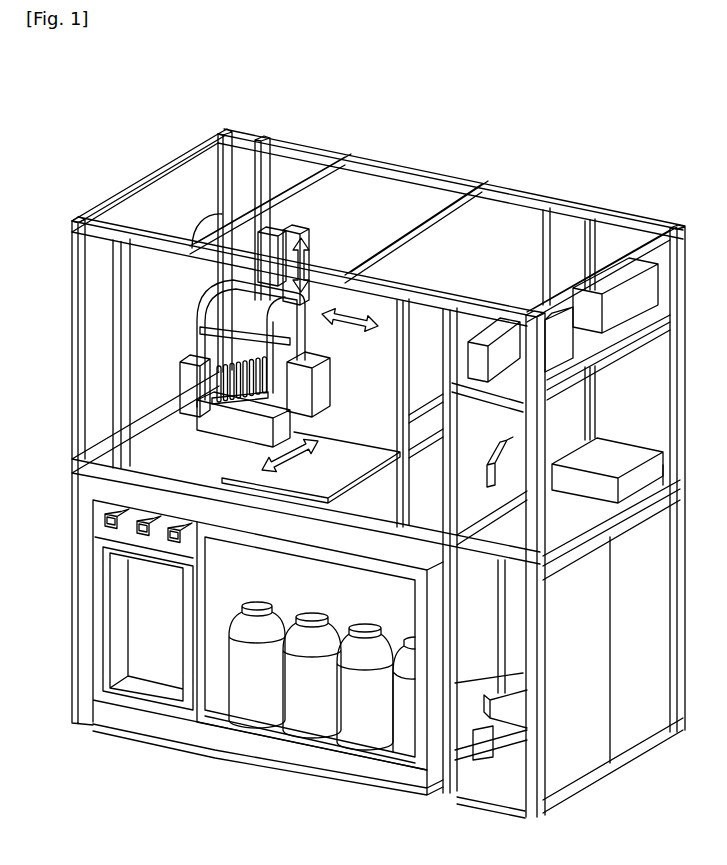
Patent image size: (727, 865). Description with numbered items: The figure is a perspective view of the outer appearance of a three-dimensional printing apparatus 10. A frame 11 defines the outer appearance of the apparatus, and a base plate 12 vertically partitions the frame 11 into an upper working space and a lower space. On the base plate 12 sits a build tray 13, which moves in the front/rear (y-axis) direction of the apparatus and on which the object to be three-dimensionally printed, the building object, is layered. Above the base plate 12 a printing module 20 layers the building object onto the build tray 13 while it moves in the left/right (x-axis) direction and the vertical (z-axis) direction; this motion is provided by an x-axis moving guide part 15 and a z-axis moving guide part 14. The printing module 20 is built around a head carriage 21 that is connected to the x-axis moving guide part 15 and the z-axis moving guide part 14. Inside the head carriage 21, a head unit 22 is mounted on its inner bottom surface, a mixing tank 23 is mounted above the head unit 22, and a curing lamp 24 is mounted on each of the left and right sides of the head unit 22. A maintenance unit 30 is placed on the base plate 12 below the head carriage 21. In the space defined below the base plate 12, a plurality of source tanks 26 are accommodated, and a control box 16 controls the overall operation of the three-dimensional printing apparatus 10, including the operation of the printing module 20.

The 3D printing apparatus 10 is at (457, 103).
The frame 11 is at (70, 244).
The base plate 12 is at (185, 467).
The build tray 13 is at (375, 443).
The z-axis moving guide part 14 is at (262, 272).
The x-axis moving guide part 15 is at (347, 292).
The control box 16 is at (478, 677).
The printing module 20 is at (180, 298).
The head carriage 21 is at (217, 257).
The head unit 22 is at (187, 378).
The mixing tank 23 is at (207, 335).
The curing lamp 24 is at (288, 384).
The source tanks 26 is at (254, 700).
The maintenance unit 30 is at (220, 428).